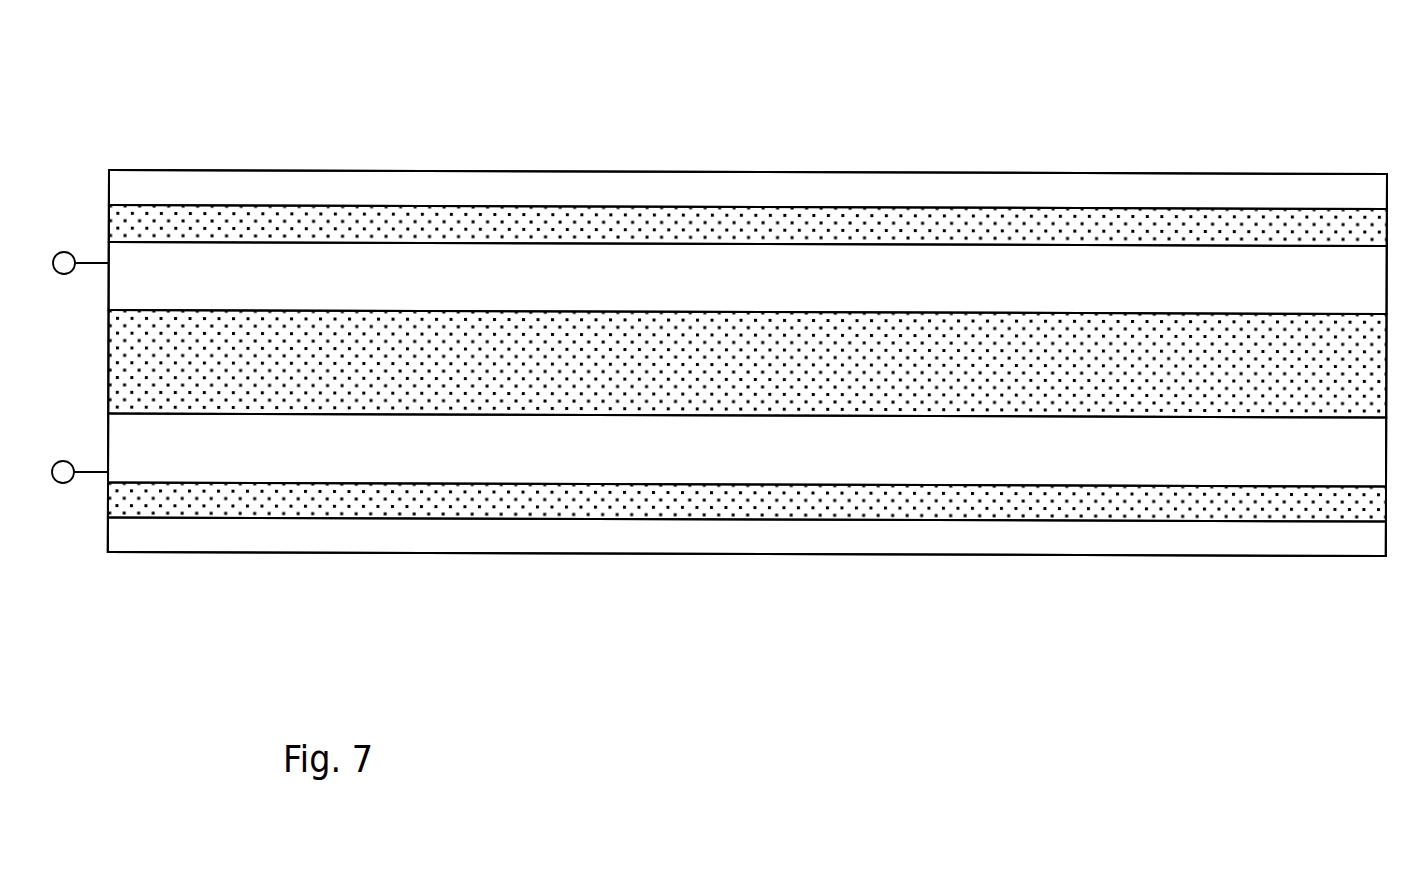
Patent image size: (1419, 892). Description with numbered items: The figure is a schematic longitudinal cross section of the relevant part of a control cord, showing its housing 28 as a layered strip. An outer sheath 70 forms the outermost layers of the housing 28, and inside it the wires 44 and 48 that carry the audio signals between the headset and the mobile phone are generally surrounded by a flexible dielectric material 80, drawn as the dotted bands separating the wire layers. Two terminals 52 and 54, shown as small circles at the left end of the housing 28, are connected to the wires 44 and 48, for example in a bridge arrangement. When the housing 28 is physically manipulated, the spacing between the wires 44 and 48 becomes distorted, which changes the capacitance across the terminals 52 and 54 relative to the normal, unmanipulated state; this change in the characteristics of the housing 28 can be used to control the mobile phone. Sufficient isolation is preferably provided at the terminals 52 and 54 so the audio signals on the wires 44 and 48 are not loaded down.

The housing 28 is at (688, 142).
The wire 44 is at (748, 178).
The wire 48 is at (747, 539).
The terminal 52 is at (67, 252).
The terminal 54 is at (64, 483).
The outer sheath 70 is at (748, 157).
The flexible dielectric material 80 is at (747, 382).